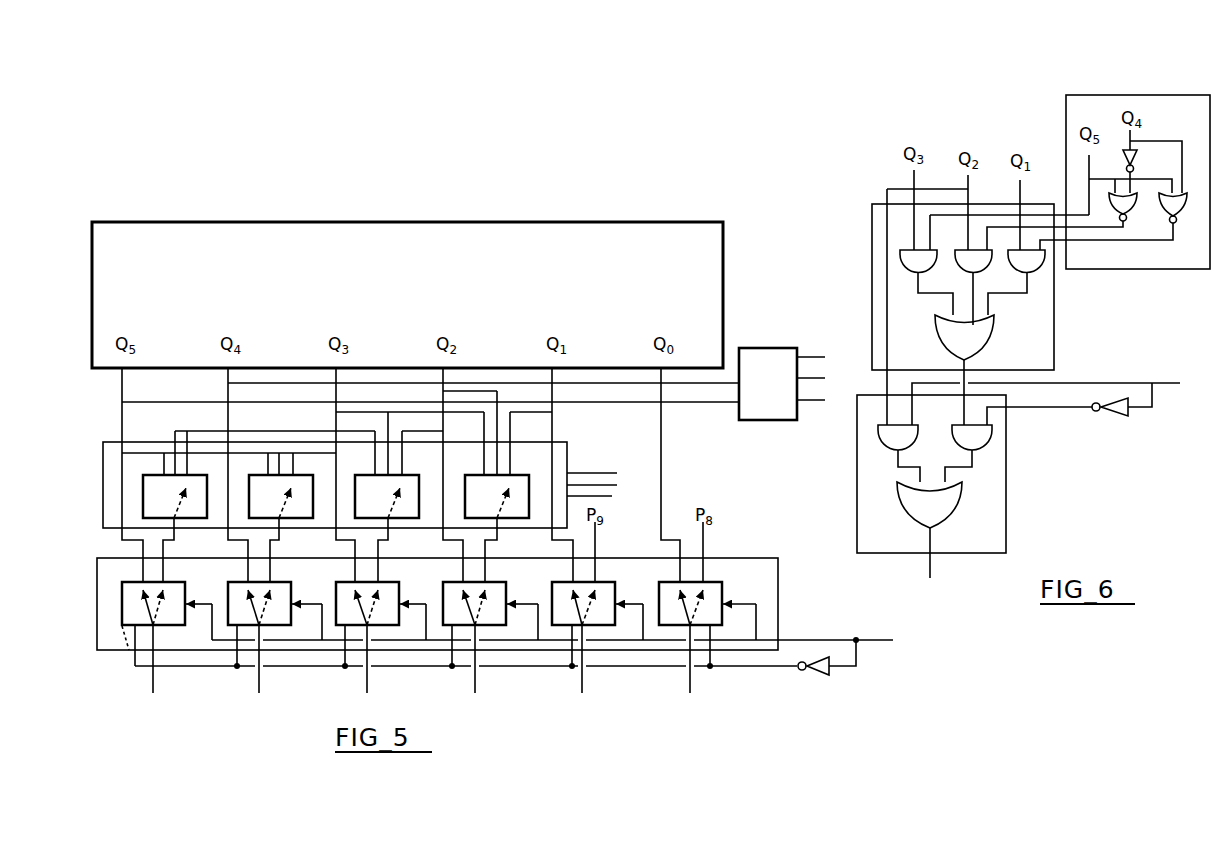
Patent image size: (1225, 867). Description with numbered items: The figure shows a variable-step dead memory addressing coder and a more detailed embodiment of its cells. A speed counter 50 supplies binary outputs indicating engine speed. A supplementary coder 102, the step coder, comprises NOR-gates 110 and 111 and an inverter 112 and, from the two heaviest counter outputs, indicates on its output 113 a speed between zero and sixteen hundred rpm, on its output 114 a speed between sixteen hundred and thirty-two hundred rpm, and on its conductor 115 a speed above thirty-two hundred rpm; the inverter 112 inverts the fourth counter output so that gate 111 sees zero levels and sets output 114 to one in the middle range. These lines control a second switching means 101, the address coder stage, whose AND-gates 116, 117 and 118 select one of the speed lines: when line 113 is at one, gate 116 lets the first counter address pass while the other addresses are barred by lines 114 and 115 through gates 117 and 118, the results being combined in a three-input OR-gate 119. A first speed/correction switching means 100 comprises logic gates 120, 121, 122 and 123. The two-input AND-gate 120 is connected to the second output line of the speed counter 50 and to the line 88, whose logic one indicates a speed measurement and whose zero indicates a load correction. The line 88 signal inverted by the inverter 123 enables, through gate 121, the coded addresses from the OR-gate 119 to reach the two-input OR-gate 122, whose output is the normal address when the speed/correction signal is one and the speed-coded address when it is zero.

In FIG. 5, the speed counter 50 is at (684, 265).
In FIG. 5, the line 88 is at (796, 638).
In FIG. 6, the line 88 is at (1120, 383).
In FIG. 5, the first speed/correction switching means 100 is at (776, 568).
In FIG. 6, the first speed/correction switching means 100 is at (936, 486).
In FIG. 5, the second switching means 101 is at (567, 470).
In FIG. 6, the second switching means 101 is at (989, 314).
In FIG. 5, the supplementary coder 102 is at (787, 356).
In FIG. 6, the supplementary coder 102 is at (1138, 166).
In FIG. 6, the NOR-gate 110 is at (1177, 210).
In FIG. 6, the NOR-gate 111 is at (1128, 207).
In FIG. 6, the inverter 112 is at (1136, 158).
In FIG. 5, the output 113 is at (818, 400).
In FIG. 6, the output 113 is at (1150, 242).
In FIG. 5, the output 114 is at (825, 378).
In FIG. 6, the output 114 is at (1080, 230).
In FIG. 5, the output 115 is at (825, 357).
In FIG. 6, the output 115 is at (1076, 214).
In FIG. 6, the AND-gate 116 is at (1035, 268).
In FIG. 6, the AND-gate 117 is at (965, 252).
In FIG. 6, the AND-gate 118 is at (905, 268).
In FIG. 6, the OR-gate 119 is at (978, 338).
In FIG. 6, the AND-gate 120 is at (878, 440).
In FIG. 6, the AND-gate 121 is at (992, 440).
In FIG. 6, the OR-gate 122 is at (915, 510).
In FIG. 6, the inverter 123 is at (1117, 416).